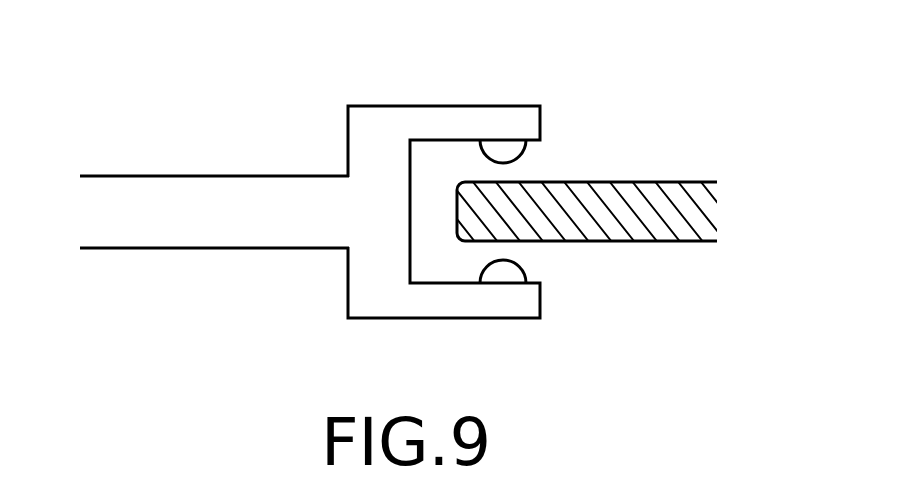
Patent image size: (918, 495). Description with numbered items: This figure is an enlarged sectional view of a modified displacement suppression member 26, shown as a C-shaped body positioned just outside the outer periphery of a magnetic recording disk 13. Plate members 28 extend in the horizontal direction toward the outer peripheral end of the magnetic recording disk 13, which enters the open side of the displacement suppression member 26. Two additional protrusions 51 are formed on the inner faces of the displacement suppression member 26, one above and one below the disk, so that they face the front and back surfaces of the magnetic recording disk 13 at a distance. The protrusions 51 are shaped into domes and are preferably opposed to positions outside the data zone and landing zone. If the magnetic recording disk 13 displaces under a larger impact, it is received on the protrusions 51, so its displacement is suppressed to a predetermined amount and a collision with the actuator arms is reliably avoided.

The magnetic recording disk 13 is at (705, 182).
The displacement suppression member 26 is at (293, 77).
The plate members 28 is at (265, 176).
The protrusions 51 is at (517, 155).